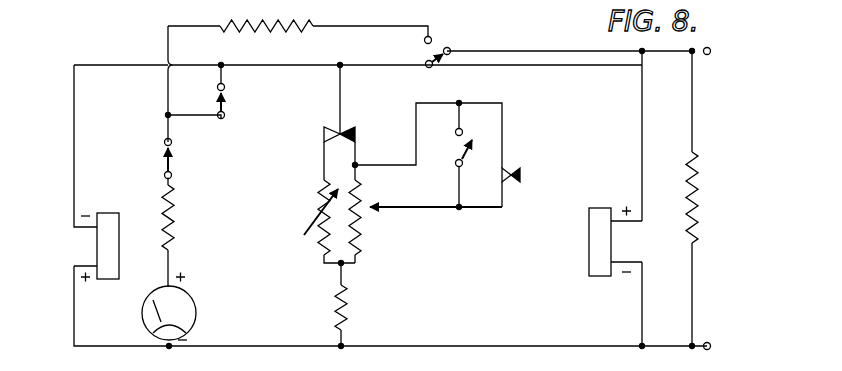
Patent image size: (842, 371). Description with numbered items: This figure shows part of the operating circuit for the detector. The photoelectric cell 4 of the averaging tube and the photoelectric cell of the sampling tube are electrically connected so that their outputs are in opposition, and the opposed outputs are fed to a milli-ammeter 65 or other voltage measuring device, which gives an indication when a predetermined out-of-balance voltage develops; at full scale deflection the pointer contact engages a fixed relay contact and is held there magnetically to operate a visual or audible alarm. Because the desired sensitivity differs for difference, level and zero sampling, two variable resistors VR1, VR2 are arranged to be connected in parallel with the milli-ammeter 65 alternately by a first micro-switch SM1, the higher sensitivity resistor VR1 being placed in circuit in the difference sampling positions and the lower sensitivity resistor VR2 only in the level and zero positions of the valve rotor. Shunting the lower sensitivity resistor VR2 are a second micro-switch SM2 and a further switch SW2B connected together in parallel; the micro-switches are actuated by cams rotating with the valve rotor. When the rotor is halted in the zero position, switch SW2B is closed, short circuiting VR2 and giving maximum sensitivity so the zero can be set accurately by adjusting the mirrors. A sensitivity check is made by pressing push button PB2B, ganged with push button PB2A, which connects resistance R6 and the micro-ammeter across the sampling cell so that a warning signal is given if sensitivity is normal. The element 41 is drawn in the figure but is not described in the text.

The resistance R6 is at (298, 20).
The push button PB2A is at (450, 50).
The push button PB2B is at (217, 92).
The first micro-switch SM1 is at (342, 126).
The further switch SW2B is at (457, 148).
The second micro-switch SM2 is at (508, 166).
The variable resistor VR1 is at (318, 208).
The variable resistor VR2 is at (363, 193).
The photoelectric cell 4 is at (110, 235).
The milli-ammeter 65 is at (190, 308).
The battery 41 is at (597, 246).